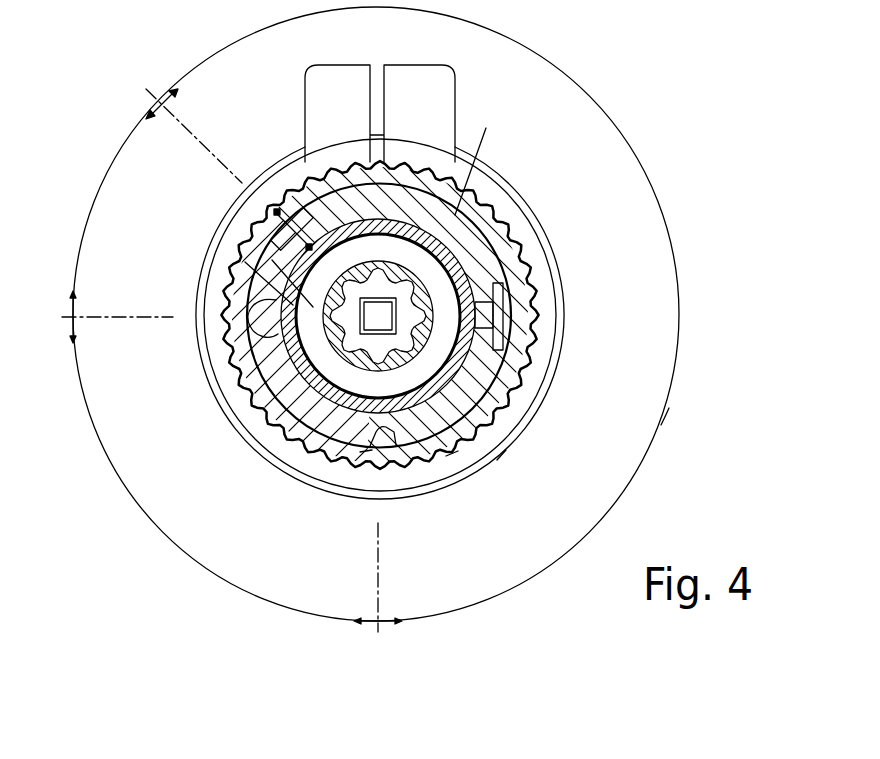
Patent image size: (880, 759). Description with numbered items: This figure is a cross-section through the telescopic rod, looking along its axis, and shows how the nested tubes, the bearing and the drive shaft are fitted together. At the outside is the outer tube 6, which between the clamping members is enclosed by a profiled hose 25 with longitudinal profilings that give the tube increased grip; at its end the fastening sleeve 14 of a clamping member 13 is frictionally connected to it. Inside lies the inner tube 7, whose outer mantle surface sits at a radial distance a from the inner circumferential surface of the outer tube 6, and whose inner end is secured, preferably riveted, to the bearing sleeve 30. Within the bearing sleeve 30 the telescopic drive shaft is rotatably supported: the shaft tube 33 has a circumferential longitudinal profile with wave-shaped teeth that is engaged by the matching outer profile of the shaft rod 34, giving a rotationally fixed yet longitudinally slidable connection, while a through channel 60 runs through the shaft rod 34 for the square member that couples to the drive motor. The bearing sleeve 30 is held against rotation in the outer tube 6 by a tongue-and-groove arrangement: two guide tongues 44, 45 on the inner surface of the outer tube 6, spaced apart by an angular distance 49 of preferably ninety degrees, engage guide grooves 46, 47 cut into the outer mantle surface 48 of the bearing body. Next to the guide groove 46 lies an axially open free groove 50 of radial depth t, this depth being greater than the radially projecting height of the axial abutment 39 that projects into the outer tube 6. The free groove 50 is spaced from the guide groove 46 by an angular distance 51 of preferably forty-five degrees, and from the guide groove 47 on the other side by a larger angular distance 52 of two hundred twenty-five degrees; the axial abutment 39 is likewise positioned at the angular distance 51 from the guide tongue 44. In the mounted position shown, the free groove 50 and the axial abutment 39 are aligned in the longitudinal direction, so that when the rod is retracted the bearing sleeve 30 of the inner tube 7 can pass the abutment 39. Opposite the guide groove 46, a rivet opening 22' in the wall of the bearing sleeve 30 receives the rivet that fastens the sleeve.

The outer tube 6 is at (332, 455).
The inner tube 7 is at (250, 383).
The clamping member 13 is at (536, 236).
The fastening sleeve 14 is at (537, 267).
The rivet opening 22' is at (562, 316).
The profiled hose 25 is at (327, 460).
The bearing sleeve 30 is at (478, 222).
The shaft tube 33 is at (432, 340).
The shaft rod 34 is at (502, 455).
The axial abutment 39 is at (279, 213).
The guide tongue 44 is at (253, 310).
The guide tongue 45 is at (367, 450).
The guide groove 46 is at (262, 343).
The guide groove 47 is at (392, 438).
The outer mantle surface 48 is at (452, 453).
The angular distance 49 is at (162, 534).
The free groove 50 is at (286, 236).
The angular distance 51 is at (92, 207).
The angular distance 52 is at (669, 408).
The through channel 60 is at (440, 335).
The radial distance a is at (490, 144).
The radial depth t is at (268, 178).